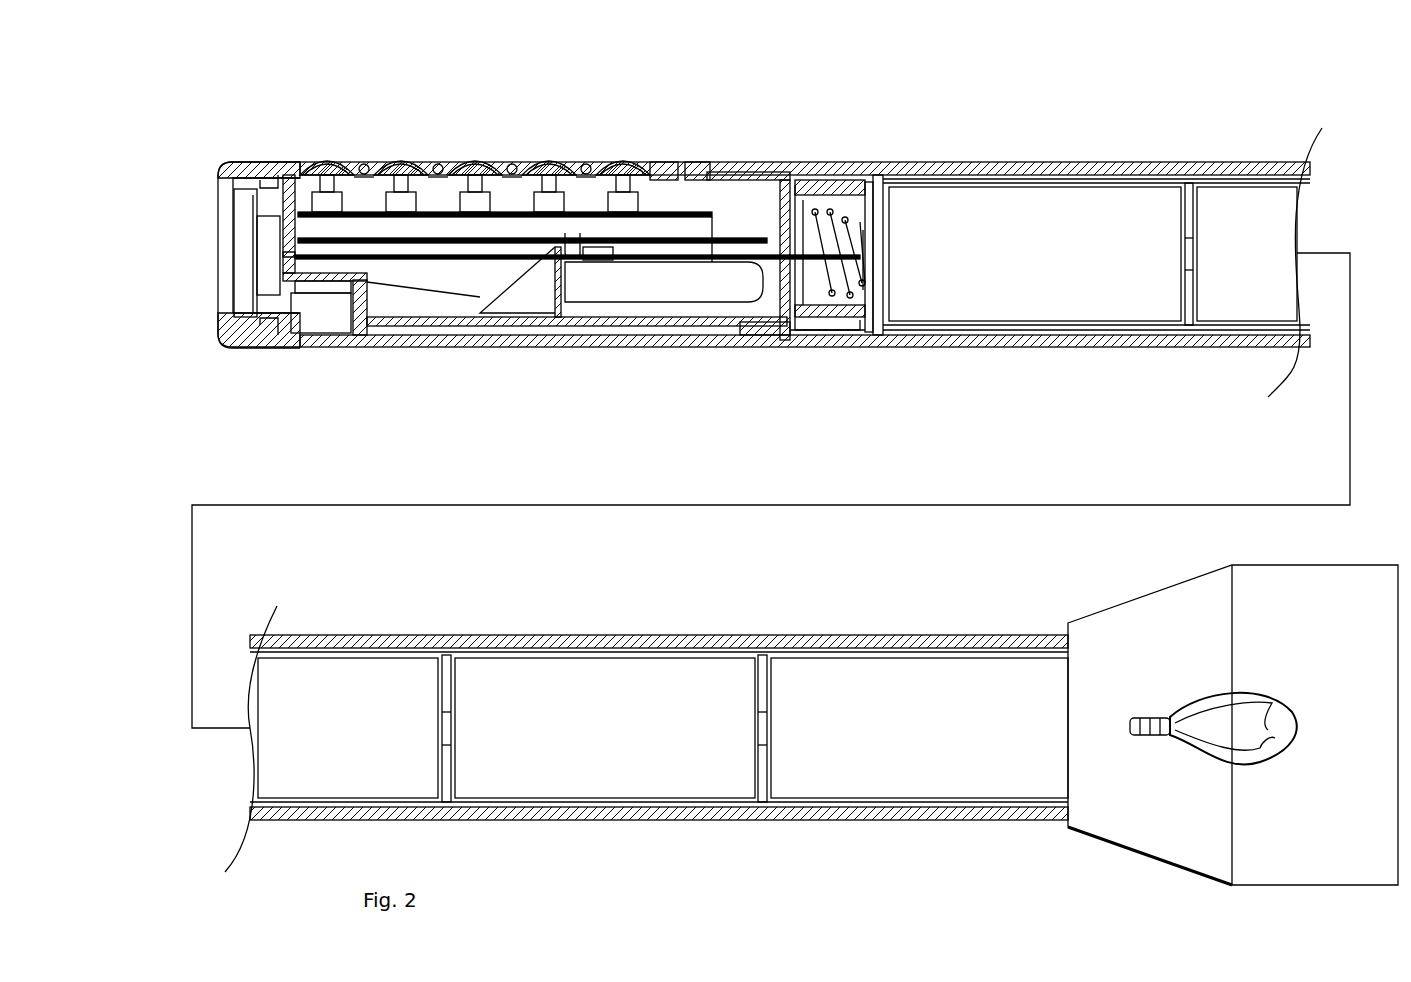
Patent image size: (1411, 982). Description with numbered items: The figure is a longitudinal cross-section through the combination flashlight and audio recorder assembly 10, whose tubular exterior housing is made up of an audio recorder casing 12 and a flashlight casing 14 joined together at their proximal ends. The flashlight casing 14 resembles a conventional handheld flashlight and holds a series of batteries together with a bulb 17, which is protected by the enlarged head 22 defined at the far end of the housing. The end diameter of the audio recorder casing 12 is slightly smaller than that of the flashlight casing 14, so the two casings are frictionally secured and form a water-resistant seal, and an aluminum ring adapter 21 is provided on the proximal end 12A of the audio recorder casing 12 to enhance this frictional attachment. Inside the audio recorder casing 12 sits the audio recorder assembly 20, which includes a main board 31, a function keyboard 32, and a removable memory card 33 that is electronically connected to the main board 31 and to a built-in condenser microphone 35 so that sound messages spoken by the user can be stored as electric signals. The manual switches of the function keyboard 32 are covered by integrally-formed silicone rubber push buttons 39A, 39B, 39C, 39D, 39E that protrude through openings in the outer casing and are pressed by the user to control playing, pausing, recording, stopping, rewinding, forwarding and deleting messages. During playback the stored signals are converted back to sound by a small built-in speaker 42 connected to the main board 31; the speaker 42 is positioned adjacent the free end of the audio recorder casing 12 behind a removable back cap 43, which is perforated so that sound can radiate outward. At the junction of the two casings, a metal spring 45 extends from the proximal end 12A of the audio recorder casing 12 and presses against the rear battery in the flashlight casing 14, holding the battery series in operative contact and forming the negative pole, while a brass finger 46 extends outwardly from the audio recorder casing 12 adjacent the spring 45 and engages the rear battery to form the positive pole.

The assembly 10 is at (268, 128).
The audio recorder casing 12 is at (448, 348).
The proximal end of the audio recorder casing 12A is at (868, 348).
The flashlight casing 14 is at (765, 635).
The bulb 17 is at (1210, 690).
The audio recorder assembly 20 is at (548, 383).
The aluminum ring adapter 21 is at (840, 175).
The enlarged head 22 is at (1230, 880).
The main board 31 is at (740, 178).
The function keyboard 32 is at (706, 175).
The removable memory card 33 is at (940, 176).
The built-in condenser microphone 35 is at (318, 312).
The silicone rubber push button 39A is at (327, 163).
The silicone rubber push button 39B is at (401, 163).
The silicone rubber push button 39C is at (475, 163).
The silicone rubber push button 39D is at (549, 163).
The silicone rubber push button 39E is at (619, 163).
The built-in speaker 42 is at (240, 272).
The removable back cap 43 is at (225, 185).
The metal spring 45 is at (820, 175).
The brass finger 46 is at (880, 175).